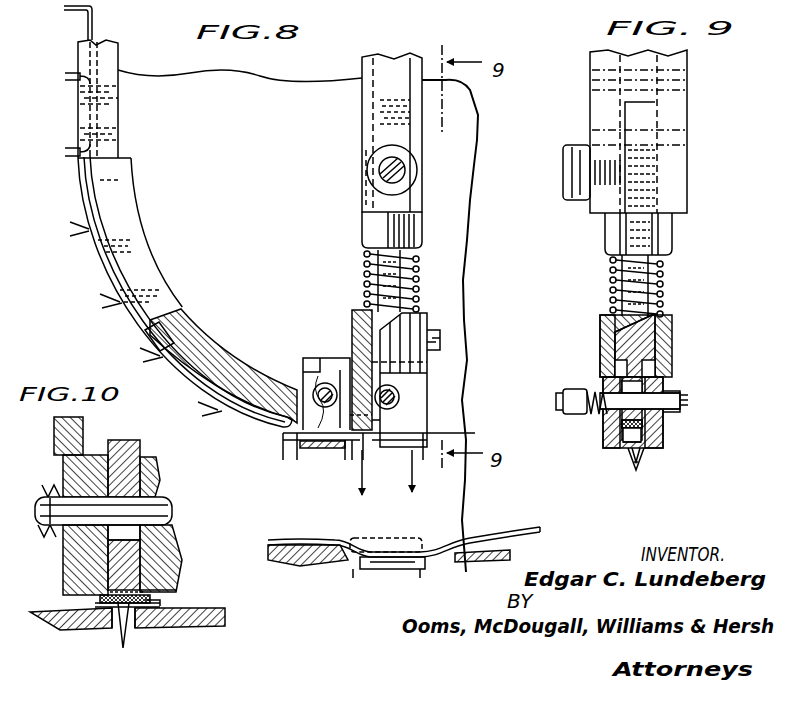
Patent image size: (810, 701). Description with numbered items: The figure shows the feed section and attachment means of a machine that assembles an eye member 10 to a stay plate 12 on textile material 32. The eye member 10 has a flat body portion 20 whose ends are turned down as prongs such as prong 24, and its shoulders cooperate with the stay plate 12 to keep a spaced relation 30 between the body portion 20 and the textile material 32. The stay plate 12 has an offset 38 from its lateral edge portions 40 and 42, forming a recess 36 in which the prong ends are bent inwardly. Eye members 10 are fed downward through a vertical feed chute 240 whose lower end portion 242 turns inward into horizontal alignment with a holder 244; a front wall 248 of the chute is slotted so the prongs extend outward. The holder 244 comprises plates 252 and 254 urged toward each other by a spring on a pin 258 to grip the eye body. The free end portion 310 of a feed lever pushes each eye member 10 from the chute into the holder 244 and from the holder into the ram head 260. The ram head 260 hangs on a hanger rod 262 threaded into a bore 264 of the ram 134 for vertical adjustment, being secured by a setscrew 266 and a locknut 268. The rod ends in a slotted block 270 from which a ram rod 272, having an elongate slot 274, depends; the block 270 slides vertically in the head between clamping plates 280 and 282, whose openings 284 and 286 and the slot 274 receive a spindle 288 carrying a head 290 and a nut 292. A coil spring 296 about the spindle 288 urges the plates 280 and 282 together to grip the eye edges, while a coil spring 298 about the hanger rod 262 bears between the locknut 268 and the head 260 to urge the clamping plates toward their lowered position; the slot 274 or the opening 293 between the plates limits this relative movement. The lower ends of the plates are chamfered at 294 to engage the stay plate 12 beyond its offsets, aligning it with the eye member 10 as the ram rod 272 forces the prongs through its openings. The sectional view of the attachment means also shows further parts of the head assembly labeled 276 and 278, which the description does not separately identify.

In FIG. 8, the eye member 10 is at (190, 380).
In FIG. 9, the eye member 10 is at (636, 470).
In FIG. 10, the eye member 10 is at (142, 588).
In FIG. 8, the stay plate 12 is at (380, 563).
In FIG. 10, the stay plate 12 is at (162, 608).
In FIG. 8, the body portion 20 is at (86, 23).
In FIG. 10, the prong 24 is at (120, 648).
In FIG. 8, the spaced relation 30 is at (386, 528).
In FIG. 8, the textile material 32 is at (518, 518).
In FIG. 10, the recess 36 is at (112, 628).
In FIG. 10, the offset 38 is at (100, 594).
In FIG. 10, the lateral edge portion 40 is at (105, 607).
In FIG. 10, the lateral edge portion 42 is at (152, 600).
In FIG. 8, the ram 134 is at (360, 129).
In FIG. 9, the ram 134 is at (690, 72).
In FIG. 8, the feed chute 240 is at (108, 128).
In FIG. 8, the lower end portion 242 is at (134, 238).
In FIG. 8, the holder 244 is at (300, 382).
In FIG. 8, the front wall 248 is at (150, 345).
In FIG. 8, the holder plate 252 is at (313, 353).
In FIG. 8, the holder plate 254 is at (341, 390).
In FIG. 8, the pin 258 is at (344, 388).
In FIG. 8, the ram head 260 is at (446, 304).
In FIG. 9, the ram head 260 is at (676, 325).
In FIG. 9, the hanger rod 262 is at (645, 260).
In FIG. 8, the threaded bore 264 is at (370, 200).
In FIG. 9, the threaded bore 264 is at (665, 202).
In FIG. 8, the setscrew 266 is at (382, 172).
In FIG. 9, the setscrew 266 is at (568, 182).
In FIG. 8, the locknut 268 is at (366, 228).
In FIG. 9, the locknut 268 is at (606, 234).
In FIG. 9, the slotted block 270 is at (604, 336).
In FIG. 9, the ram rod 272 is at (652, 420).
In FIG. 10, the ram rod 272 is at (130, 556).
In FIG. 9, the elongate slot 274 is at (665, 385).
In FIG. 10, the elongate slot 274 is at (132, 533).
In FIG. 10, the block 276 is at (56, 440).
In FIG. 10, the housing 278 is at (150, 480).
In FIG. 9, the clamping plate 280 is at (612, 432).
In FIG. 9, the clamping plate 282 is at (655, 432).
In FIG. 9, the opening 284 is at (606, 416).
In FIG. 9, the opening 286 is at (664, 392).
In FIG. 9, the spindle 288 is at (620, 446).
In FIG. 10, the spindle 288 is at (172, 510).
In FIG. 8, the head 290 is at (400, 397).
In FIG. 9, the head 290 is at (562, 405).
In FIG. 9, the nut 292 is at (682, 402).
In FIG. 9, the opening 293 is at (616, 366).
In FIG. 9, the chamfer 294 is at (630, 455).
In FIG. 9, the coil spring 296 is at (590, 392).
In FIG. 10, the coil spring 296 is at (48, 488).
In FIG. 8, the coil spring 298 is at (368, 286).
In FIG. 9, the coil spring 298 is at (662, 284).
In FIG. 8, the free end portion 310 is at (297, 442).